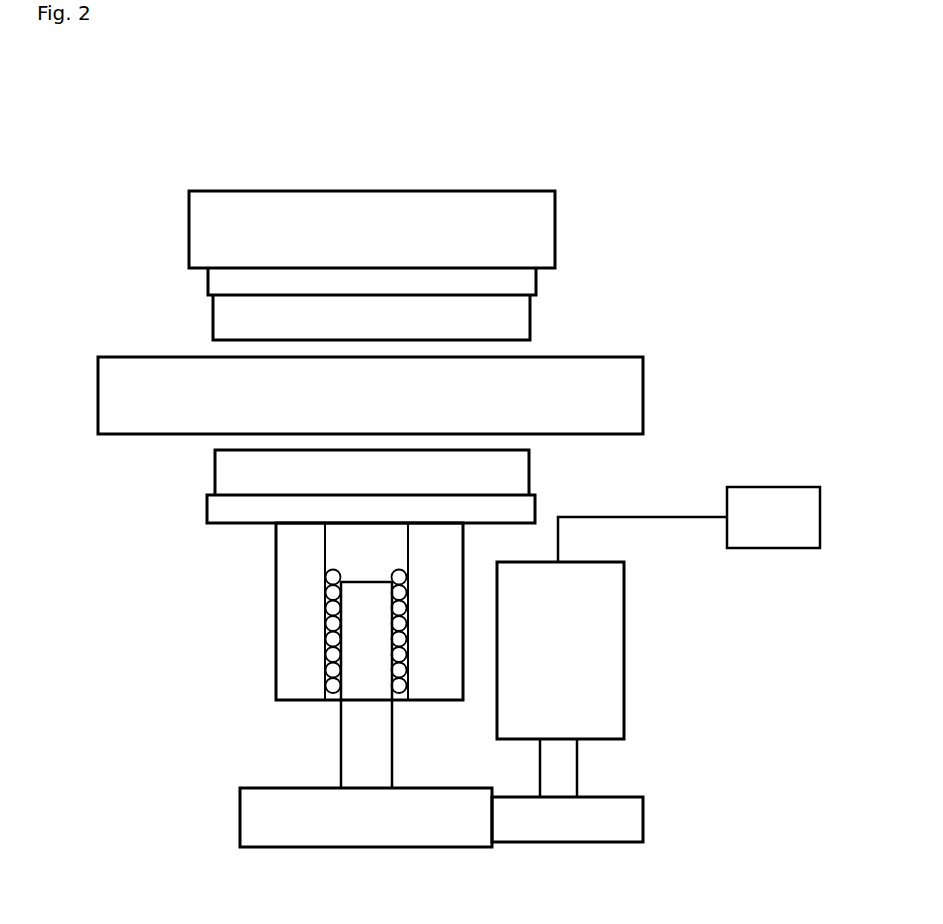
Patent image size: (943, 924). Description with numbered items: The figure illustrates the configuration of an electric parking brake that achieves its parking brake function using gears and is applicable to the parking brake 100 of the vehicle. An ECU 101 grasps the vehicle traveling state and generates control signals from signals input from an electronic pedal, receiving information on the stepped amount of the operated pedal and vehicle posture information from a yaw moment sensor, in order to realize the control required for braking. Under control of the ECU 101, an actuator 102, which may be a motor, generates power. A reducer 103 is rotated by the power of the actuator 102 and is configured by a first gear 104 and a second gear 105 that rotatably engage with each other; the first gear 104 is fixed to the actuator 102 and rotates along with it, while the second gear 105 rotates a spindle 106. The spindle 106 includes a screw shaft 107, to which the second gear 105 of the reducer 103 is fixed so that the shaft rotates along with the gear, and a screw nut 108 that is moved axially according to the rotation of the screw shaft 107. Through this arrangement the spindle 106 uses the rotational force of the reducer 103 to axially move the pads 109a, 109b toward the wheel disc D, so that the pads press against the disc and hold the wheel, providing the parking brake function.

The parking brake 100 is at (688, 123).
The ECU 101 is at (773, 487).
The actuator 102 is at (617, 578).
The reducer 103 is at (773, 663).
The first gear 104 is at (612, 809).
The second gear 105 is at (362, 792).
The spindle 106 is at (133, 623).
The screw shaft 107 is at (357, 740).
The screw nut 108 is at (298, 630).
The pad 109a is at (498, 462).
The pad 109b is at (408, 312).
The wheel disc D is at (138, 375).